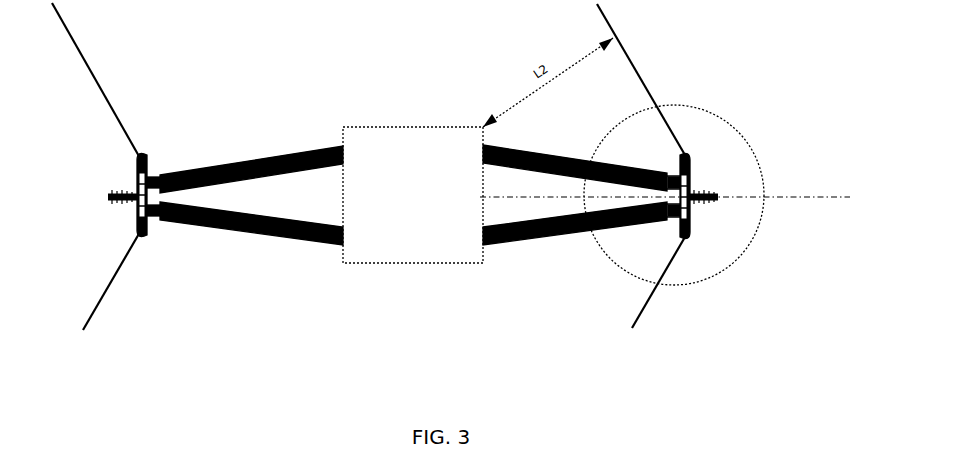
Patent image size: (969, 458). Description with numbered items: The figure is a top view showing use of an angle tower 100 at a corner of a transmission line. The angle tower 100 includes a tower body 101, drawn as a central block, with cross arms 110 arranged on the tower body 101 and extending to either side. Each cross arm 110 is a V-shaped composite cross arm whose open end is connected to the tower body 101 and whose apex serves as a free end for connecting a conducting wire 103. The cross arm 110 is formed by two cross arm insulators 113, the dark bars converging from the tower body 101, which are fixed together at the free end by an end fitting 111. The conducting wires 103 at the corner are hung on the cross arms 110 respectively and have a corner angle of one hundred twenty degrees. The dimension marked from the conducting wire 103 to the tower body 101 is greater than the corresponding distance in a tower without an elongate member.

The angle tower 100 is at (392, 82).
The tower body 101 is at (395, 167).
The conducting wire 103 is at (650, 290).
The cross arm 110 is at (647, 299).
The end fitting 111 is at (690, 181).
The cross arm insulator 113 is at (543, 240).